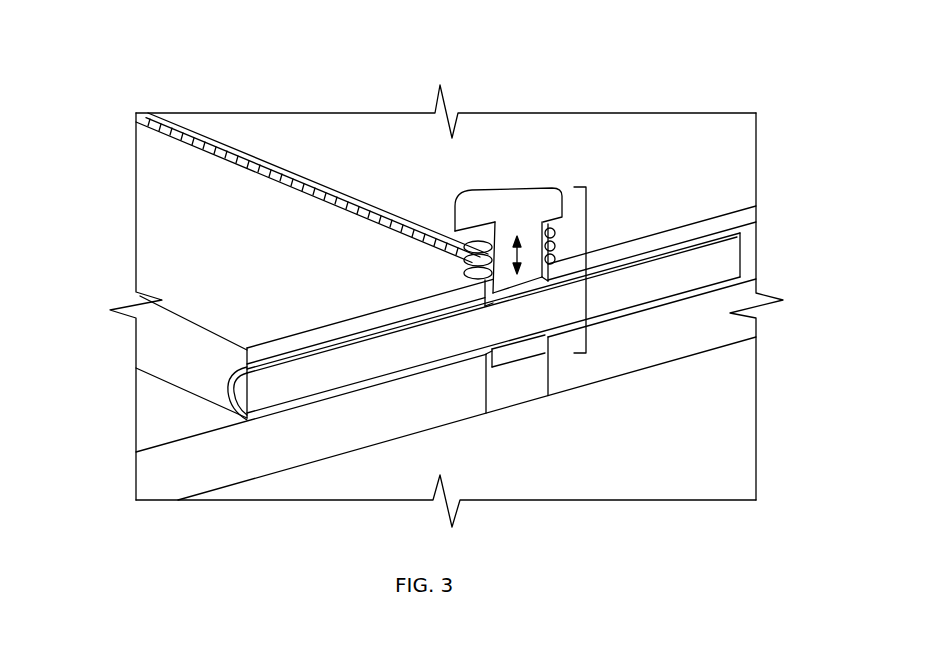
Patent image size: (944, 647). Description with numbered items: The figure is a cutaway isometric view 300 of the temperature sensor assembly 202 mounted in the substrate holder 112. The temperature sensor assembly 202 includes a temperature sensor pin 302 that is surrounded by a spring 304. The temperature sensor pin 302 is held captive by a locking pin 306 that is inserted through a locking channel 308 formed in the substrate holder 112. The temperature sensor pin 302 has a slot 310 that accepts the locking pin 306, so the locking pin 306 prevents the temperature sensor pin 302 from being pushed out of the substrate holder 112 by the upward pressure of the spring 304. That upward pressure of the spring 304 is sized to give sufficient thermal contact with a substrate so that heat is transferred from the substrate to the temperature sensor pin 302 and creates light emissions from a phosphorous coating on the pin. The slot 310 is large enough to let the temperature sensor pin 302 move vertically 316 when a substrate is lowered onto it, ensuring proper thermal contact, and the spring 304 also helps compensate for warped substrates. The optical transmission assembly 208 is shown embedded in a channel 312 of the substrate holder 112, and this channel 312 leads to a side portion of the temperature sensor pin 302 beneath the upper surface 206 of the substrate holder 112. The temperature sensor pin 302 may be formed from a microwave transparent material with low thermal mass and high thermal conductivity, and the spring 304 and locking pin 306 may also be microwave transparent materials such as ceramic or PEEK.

The cutaway isometric view 300 is at (703, 56).
The upper surface 206 is at (395, 122).
The substrate holder 112 is at (157, 220).
The locking pin 306 is at (312, 389).
The locking channel 308 is at (232, 370).
The channel 312 is at (275, 158).
The optical transmission assembly 208 is at (320, 183).
The spring 304 is at (556, 240).
The temperature sensor pin 302 is at (516, 186).
The slot 310 is at (497, 298).
The vertical movement 316 is at (522, 258).
The temperature sensor assembly 202 is at (588, 193).